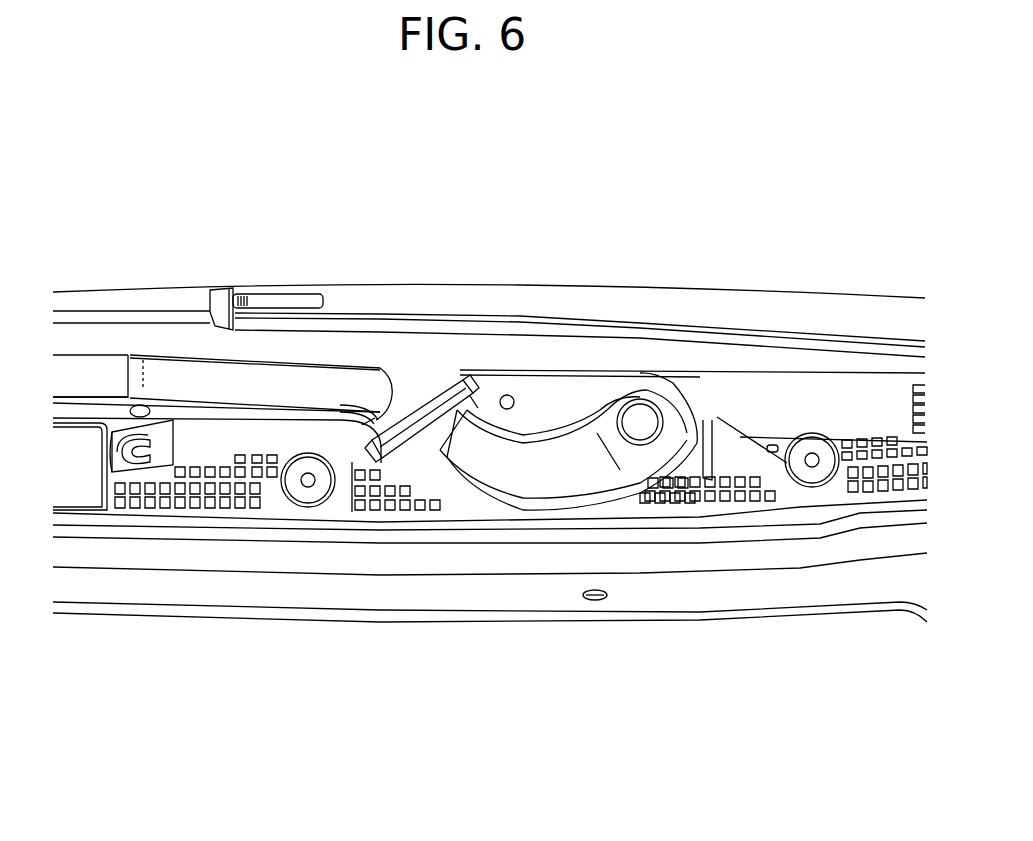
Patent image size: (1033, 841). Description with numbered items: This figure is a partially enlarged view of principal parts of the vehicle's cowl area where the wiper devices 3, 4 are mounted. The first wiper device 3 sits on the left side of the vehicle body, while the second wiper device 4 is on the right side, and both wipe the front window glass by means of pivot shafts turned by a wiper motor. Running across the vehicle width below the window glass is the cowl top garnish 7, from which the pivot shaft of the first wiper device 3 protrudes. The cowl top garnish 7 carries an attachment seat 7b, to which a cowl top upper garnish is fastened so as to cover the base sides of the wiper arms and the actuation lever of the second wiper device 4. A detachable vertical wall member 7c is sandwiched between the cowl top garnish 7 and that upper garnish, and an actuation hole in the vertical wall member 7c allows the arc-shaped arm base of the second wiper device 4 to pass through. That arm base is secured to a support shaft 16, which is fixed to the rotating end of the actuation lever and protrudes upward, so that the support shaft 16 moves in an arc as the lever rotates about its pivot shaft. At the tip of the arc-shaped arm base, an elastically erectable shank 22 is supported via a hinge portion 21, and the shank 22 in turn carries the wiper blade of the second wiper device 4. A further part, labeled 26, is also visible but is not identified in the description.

The first wiper device 3 is at (580, 285).
The second wiper device 4 is at (300, 362).
The cowl top garnish 7 is at (860, 583).
The attachment seat 7b is at (313, 493).
The vertical wall member 7c is at (432, 384).
The support shaft 16 is at (643, 413).
The hinge portion 21 is at (137, 355).
The shank 22 is at (82, 372).
The cam arm 26 is at (580, 468).